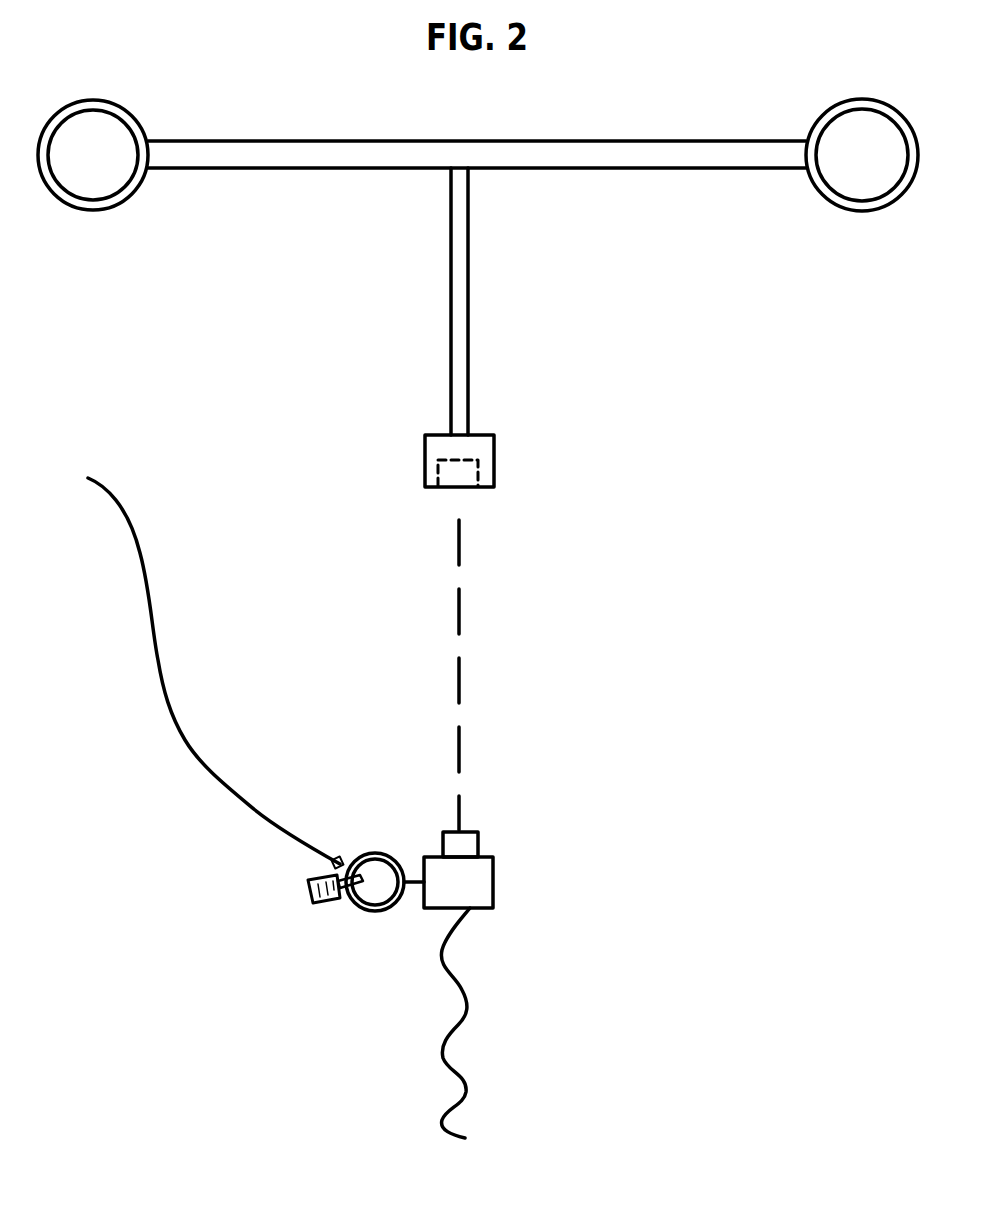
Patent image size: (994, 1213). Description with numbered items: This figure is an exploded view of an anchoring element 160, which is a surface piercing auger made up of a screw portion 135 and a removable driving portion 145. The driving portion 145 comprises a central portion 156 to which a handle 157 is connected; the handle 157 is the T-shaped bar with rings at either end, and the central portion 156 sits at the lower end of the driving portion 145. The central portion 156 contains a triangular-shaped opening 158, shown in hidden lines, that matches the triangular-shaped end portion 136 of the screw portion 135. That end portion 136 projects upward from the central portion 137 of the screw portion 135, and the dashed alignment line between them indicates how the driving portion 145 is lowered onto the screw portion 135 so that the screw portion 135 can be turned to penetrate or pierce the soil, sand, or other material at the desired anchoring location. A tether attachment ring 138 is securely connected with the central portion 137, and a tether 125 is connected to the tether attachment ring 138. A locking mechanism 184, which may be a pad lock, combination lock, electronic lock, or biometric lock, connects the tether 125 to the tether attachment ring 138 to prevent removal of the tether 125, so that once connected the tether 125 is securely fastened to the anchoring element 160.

The handle 157 is at (633, 141).
The driving portion 145 is at (468, 374).
The central portion 156 is at (494, 445).
The triangular-shaped opening 158 is at (460, 472).
The anchoring element 160 is at (752, 516).
The tether 125 is at (168, 686).
The triangular-shaped end portion 136 is at (478, 831).
The central portion 137 is at (487, 908).
The screw portion 135 is at (470, 1005).
The tether attachment ring 138 is at (357, 912).
The locking mechanism 184 is at (308, 886).